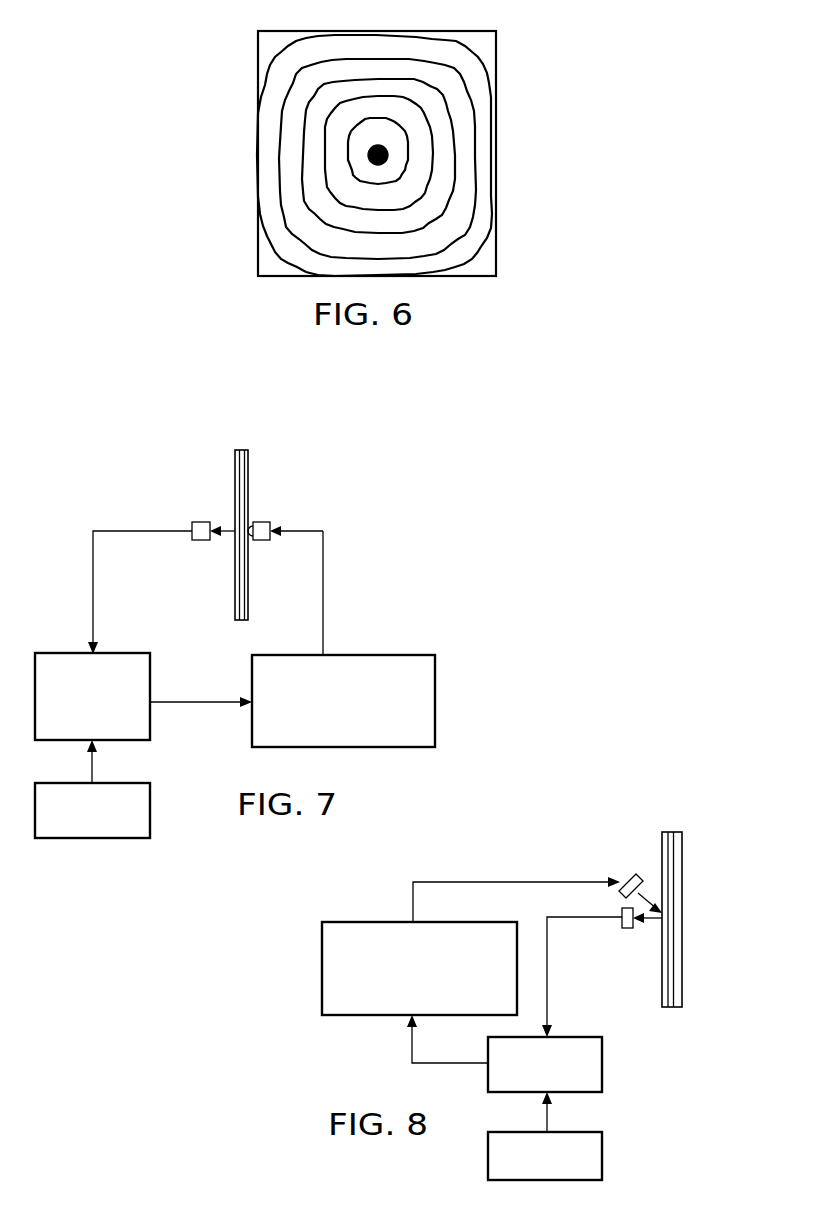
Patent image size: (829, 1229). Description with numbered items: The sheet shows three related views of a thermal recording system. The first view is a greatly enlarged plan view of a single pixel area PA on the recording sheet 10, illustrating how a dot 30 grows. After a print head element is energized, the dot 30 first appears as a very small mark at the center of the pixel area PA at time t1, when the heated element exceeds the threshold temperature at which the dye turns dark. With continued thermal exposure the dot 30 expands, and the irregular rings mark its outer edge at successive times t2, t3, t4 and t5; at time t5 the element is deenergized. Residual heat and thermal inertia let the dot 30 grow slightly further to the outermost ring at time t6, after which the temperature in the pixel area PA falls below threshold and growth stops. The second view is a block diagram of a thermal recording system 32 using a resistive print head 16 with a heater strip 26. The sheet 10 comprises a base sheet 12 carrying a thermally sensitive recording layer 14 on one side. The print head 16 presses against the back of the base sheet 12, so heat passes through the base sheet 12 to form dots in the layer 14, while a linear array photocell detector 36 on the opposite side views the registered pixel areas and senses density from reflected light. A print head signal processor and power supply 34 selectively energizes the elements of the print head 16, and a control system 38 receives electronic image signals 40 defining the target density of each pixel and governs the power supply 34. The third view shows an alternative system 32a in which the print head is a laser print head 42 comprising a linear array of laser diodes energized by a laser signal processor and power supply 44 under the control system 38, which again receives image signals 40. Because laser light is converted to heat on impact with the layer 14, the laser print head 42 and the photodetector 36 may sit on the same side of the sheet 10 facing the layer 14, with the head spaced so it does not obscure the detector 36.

In FIG. 6, the pixel area PA is at (272, 42).
In FIG. 6, the dot 30 is at (258, 145).
In FIG. 6, the time T1 t1 is at (380, 150).
In FIG. 6, the time T2 t2 is at (400, 125).
In FIG. 6, the time T3 t3 is at (422, 110).
In FIG. 6, the time T4 t4 is at (450, 105).
In FIG. 6, the time T5 t5 is at (477, 125).
In FIG. 6, the time T6 t6 is at (496, 170).
In FIG. 7, the sheet 10 is at (266, 507).
In FIG. 8, the sheet 10 is at (680, 889).
In FIG. 7, the base sheet 12 is at (249, 476).
In FIG. 8, the base sheet 12 is at (682, 853).
In FIG. 7, the thermally sensitive recording layer 14 is at (235, 462).
In FIG. 8, the thermally sensitive recording layer 14 is at (662, 845).
In FIG. 7, the print head 16 is at (267, 522).
In FIG. 7, the heater strip 26 is at (250, 527).
In FIG. 7, the thermal recording system 32 is at (235, 636).
In FIG. 8, the thermal recording system 32a is at (492, 995).
In FIG. 7, the print head signal processor and power supply 34 is at (417, 663).
In FIG. 7, the photocell detector 36 is at (200, 522).
In FIG. 8, the photocell detector 36 is at (628, 928).
In FIG. 7, the control system 38 is at (120, 660).
In FIG. 8, the control system 38 is at (603, 1056).
In FIG. 7, the electronic image signals 40 is at (145, 793).
In FIG. 8, the electronic image signals 40 is at (603, 1149).
In FIG. 8, the laser print head 42 is at (637, 875).
In FIG. 8, the laser signal processor and power supply 44 is at (470, 928).